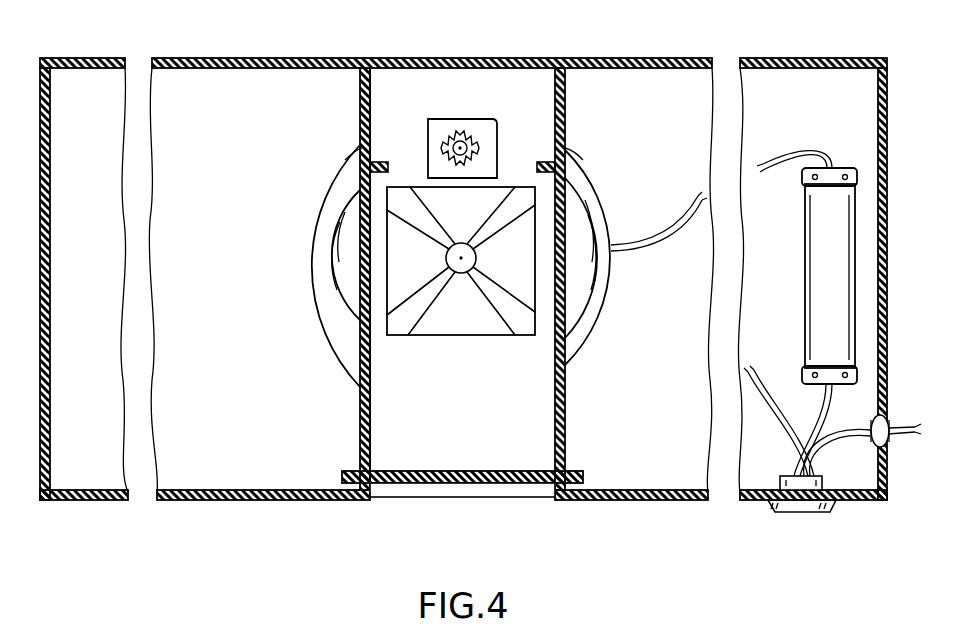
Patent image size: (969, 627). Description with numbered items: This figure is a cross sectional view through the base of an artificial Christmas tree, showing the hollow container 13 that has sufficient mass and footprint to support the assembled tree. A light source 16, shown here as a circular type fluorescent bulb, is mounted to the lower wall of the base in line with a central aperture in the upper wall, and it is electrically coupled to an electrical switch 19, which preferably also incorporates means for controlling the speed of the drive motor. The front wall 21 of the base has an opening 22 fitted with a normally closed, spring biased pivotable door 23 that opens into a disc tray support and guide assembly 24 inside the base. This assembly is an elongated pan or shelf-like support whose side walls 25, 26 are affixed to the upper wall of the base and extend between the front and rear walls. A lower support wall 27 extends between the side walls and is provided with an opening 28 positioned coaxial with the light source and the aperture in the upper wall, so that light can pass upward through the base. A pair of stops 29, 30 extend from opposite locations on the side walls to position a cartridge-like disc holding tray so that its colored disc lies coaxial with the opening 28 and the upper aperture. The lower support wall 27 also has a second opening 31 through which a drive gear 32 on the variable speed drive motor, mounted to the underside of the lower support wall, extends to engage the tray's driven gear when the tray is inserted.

The container 13 is at (886, 58).
The light source 16 is at (322, 210).
The electrical switch 19 is at (835, 508).
The front wall 21 is at (650, 500).
The opening 22 is at (378, 500).
The pivotable door 23 is at (512, 483).
The disc tray support and guide assembly 24 is at (575, 110).
The side wall 25 is at (360, 426).
The side wall 26 is at (566, 425).
The lower support wall 27 is at (382, 388).
The opening 28 is at (388, 270).
The stop 29 is at (376, 162).
The stop 30 is at (565, 142).
The second opening 31 is at (486, 120).
The drive gear 32 is at (457, 130).